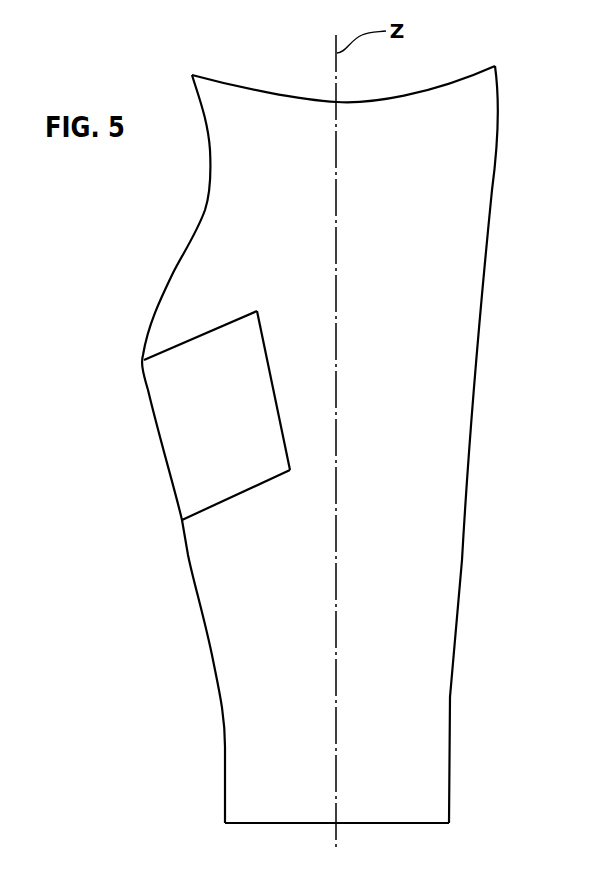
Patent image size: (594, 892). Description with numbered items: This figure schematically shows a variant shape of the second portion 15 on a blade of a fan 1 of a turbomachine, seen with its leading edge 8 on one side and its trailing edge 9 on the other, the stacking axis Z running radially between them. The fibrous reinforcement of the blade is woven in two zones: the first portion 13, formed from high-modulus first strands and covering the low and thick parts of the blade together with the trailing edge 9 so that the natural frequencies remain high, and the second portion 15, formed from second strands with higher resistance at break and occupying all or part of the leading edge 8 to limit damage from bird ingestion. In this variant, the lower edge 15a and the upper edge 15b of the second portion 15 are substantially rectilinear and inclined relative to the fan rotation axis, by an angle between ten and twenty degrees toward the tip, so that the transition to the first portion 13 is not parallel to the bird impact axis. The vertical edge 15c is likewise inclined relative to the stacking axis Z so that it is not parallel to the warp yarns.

The fan 1 is at (348, 444).
The leading edge 8 is at (188, 244).
The trailing edge 9 is at (486, 268).
The first portion 13 is at (359, 369).
The second portion 15 is at (233, 407).
The lower edge 15a is at (236, 498).
The upper edge 15b is at (204, 330).
The vertical edge 15c is at (275, 390).